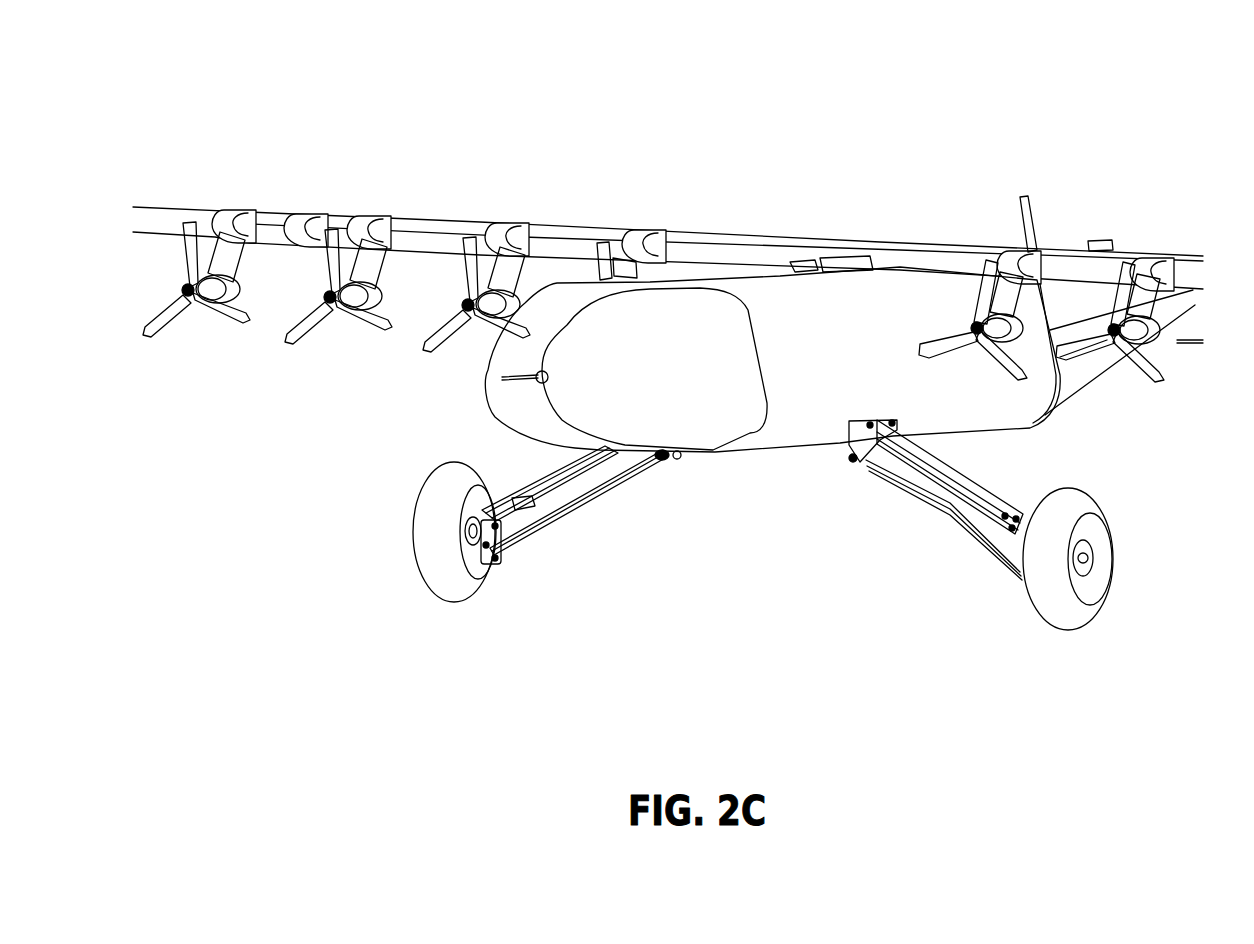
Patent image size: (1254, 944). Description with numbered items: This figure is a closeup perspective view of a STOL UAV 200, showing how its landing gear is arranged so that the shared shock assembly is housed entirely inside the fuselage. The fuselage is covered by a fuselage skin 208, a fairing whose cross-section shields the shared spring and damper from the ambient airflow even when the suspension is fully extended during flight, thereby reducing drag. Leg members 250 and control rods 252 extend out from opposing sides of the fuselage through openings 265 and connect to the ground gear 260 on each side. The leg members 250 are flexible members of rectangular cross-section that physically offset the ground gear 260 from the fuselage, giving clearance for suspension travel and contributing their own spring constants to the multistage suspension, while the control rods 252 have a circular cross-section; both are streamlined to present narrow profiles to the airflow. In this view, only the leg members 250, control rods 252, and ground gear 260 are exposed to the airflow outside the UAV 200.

The UAV 200 is at (953, 125).
The fuselage skin 208 is at (852, 358).
The leg members 250 is at (543, 473).
The control rods 252 is at (534, 532).
The ground gear 260 is at (450, 550).
The openings 265 is at (826, 463).